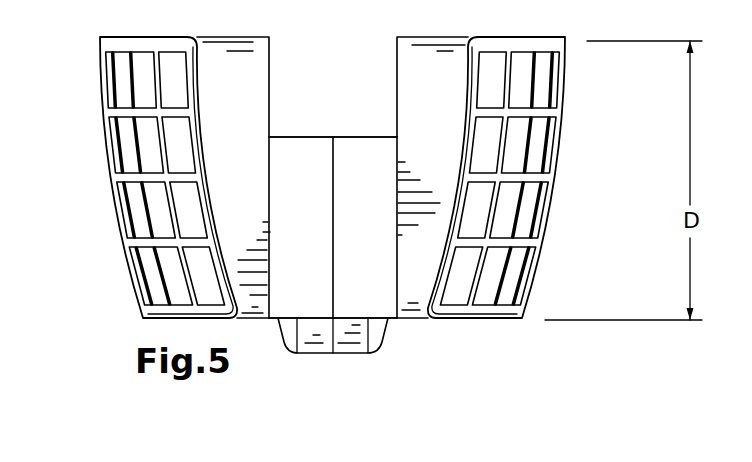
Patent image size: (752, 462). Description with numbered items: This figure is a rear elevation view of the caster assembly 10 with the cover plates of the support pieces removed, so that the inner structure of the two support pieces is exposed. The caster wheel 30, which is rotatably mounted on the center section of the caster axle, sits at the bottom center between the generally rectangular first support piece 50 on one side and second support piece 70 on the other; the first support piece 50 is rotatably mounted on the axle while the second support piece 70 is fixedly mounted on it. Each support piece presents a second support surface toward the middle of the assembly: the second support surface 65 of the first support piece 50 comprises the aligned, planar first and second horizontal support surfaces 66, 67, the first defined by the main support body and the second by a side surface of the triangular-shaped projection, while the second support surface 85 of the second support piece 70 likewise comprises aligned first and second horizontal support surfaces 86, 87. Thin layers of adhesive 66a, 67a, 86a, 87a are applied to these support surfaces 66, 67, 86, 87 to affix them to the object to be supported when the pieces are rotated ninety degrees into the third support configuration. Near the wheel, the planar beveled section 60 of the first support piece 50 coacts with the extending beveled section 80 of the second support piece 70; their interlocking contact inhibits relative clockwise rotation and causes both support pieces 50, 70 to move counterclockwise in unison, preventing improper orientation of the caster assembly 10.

The caster assembly 10 is at (588, 133).
The caster wheel 30 is at (342, 368).
The first support piece 50 is at (242, 335).
The planar beveled section 60 is at (268, 243).
The second support surface 65 is at (212, 106).
The first horizontal support surface 66 is at (252, 87).
The thin layer of adhesive 66a is at (258, 150).
The second horizontal support surface 67 is at (310, 180).
The thin layer of adhesive 67a is at (322, 234).
The second support piece 70 is at (472, 337).
The planar beveled section 80 is at (396, 257).
The second support surface 85 is at (414, 126).
The first horizontal support surface 86 is at (440, 78).
The thin layer of adhesive 86a is at (452, 151).
The second horizontal support surface 87 is at (372, 193).
The thin layer of adhesive 87a is at (380, 253).